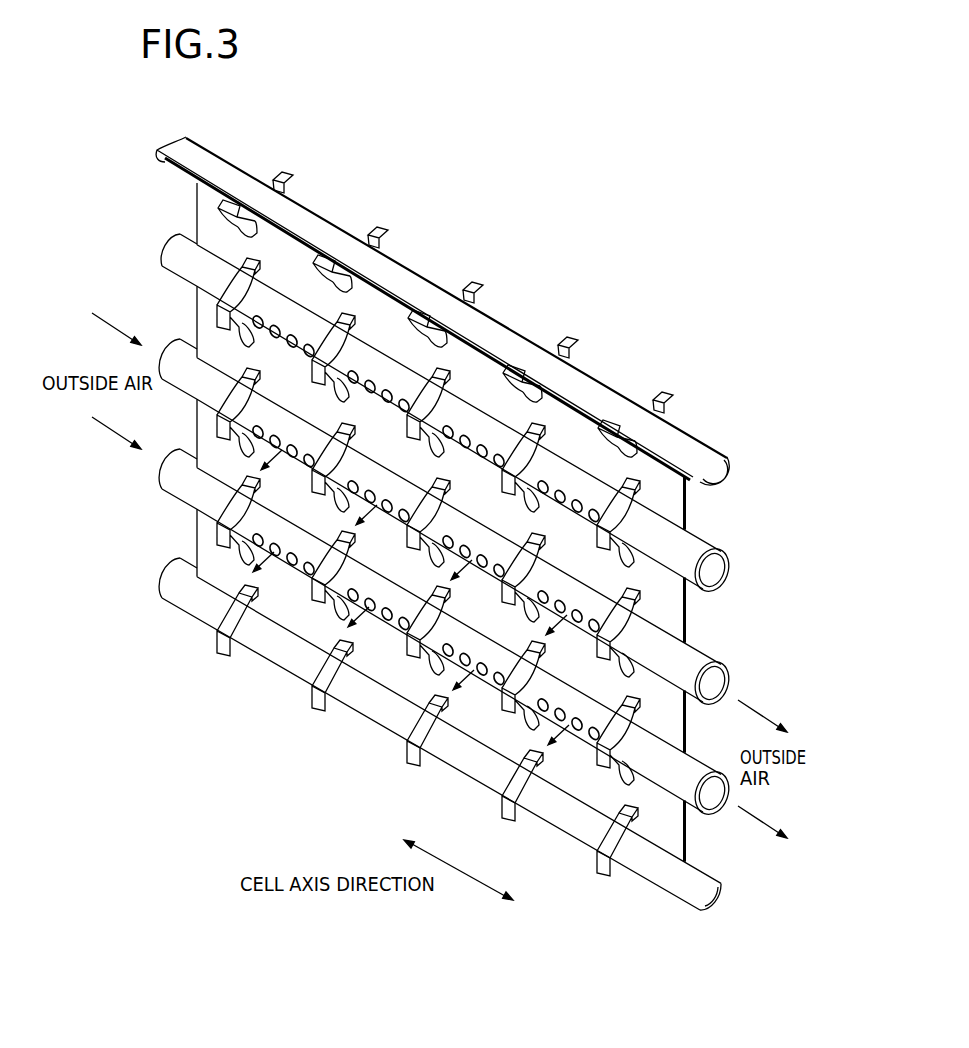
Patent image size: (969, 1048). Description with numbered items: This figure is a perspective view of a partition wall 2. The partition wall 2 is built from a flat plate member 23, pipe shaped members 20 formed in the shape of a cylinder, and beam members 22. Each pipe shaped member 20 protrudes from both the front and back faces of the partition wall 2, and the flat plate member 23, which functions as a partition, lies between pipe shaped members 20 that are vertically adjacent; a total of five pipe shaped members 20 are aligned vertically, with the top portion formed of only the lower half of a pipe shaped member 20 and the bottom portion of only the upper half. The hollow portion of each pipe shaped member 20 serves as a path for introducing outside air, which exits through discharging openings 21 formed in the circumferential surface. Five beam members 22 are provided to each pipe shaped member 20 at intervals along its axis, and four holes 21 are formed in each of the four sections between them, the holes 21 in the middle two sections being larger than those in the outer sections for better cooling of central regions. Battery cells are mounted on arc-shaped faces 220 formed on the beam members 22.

The partition wall 2 is at (690, 620).
The pipe shaped member 20 is at (693, 543).
The discharging opening 21 is at (432, 662).
The beam member 22 is at (433, 376).
The arc-shaped face 220 is at (245, 518).
The flat plate member 23 is at (288, 612).